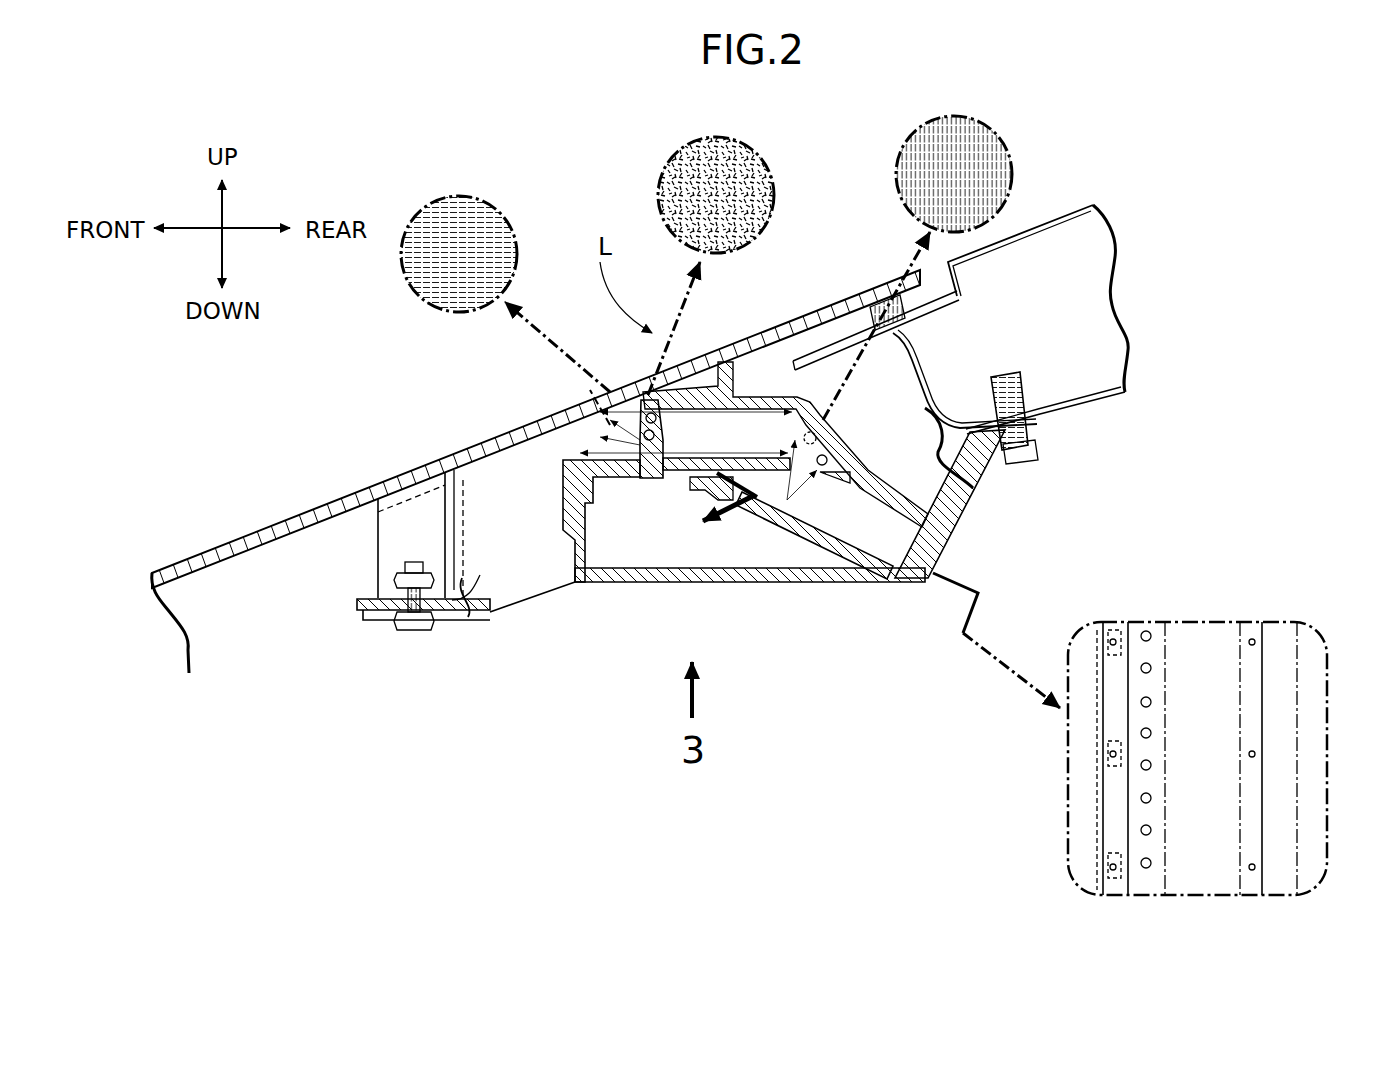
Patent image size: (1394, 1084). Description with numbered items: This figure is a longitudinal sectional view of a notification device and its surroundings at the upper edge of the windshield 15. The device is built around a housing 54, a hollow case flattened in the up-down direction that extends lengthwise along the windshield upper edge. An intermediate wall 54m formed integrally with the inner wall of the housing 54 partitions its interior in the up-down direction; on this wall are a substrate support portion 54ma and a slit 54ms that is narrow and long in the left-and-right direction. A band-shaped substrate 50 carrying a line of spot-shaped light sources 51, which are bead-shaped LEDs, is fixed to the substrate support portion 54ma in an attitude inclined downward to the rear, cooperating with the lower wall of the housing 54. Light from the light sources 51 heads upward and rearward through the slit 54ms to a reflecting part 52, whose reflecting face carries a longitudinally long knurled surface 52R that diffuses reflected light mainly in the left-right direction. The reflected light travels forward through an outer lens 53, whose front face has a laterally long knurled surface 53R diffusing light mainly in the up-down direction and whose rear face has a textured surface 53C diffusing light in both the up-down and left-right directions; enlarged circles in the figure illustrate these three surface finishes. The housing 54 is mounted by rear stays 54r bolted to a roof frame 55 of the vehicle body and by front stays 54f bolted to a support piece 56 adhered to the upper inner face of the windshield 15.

The windshield 15 is at (292, 520).
The band-shaped substrate 50 is at (840, 565).
The spot-shaped light sources 51 is at (787, 500).
The reflecting part 52 is at (770, 400).
The longitudinally long knurled surface 52R is at (993, 150).
The outer lens 53 is at (673, 478).
The laterally long knurled surface 53R is at (453, 215).
The textured surface 53C is at (740, 165).
The housing 54 is at (738, 590).
The front stays 54f is at (385, 613).
The intermediate wall 54m is at (692, 478).
The substrate support portion 54ma is at (722, 510).
The slit 54ms is at (793, 457).
The rear stays 54r is at (1000, 470).
The roof frame 55 is at (1078, 405).
The support piece 56 is at (380, 545).